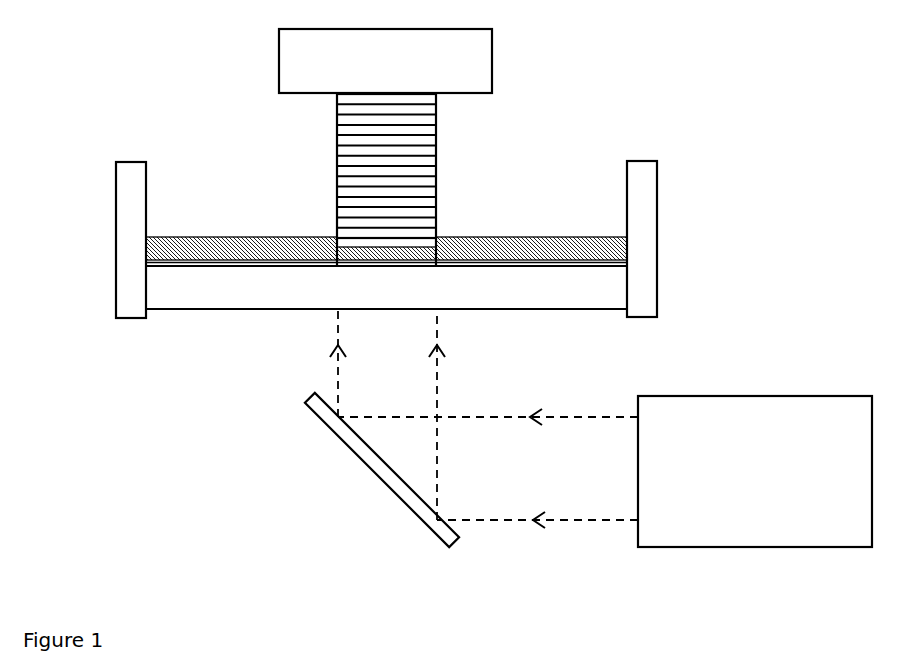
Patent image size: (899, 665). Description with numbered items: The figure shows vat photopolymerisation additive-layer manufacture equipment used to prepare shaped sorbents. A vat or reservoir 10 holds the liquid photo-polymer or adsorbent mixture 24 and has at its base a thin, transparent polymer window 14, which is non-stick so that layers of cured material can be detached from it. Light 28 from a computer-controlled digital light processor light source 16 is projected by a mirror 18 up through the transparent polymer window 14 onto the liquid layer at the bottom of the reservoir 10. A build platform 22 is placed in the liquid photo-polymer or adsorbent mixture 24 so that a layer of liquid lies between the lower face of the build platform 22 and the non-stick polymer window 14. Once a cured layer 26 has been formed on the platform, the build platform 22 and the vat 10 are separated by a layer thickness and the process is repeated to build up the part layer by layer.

The vat 10 is at (718, 171).
The transparent polymer window 14 is at (229, 298).
The digital light processor light source 16 is at (755, 471).
The mirror 18 is at (366, 458).
The build platform 22 is at (467, 60).
The liquid photo-polymer or adsorbent mixture 24 is at (231, 245).
The cured layer 26 is at (422, 182).
The light 28 is at (585, 417).